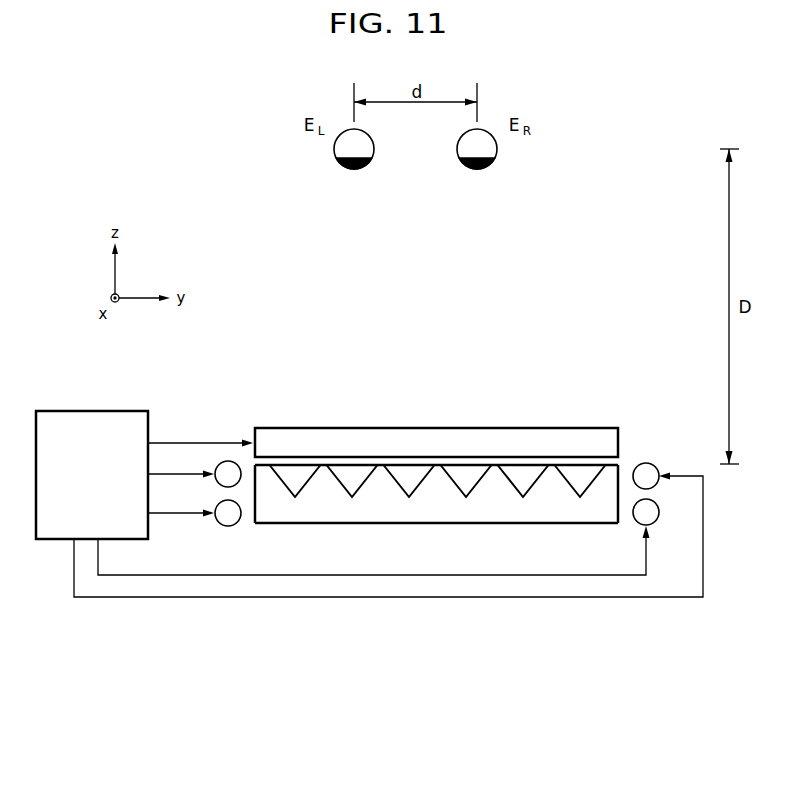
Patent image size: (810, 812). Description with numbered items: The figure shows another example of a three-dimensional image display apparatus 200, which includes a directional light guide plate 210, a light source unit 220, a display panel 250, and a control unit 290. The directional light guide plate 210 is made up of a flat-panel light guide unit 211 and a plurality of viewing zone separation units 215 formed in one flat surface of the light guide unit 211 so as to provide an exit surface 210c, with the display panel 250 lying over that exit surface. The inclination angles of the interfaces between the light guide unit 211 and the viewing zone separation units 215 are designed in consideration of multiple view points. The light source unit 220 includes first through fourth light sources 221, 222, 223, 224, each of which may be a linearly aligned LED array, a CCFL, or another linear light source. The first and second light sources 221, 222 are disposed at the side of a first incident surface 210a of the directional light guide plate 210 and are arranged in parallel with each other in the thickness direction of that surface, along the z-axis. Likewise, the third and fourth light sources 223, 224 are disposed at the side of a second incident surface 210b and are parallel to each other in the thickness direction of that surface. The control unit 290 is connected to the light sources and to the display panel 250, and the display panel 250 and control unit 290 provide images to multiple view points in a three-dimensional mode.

The 3D image display apparatus 200 is at (121, 196).
The control unit 290 is at (67, 411).
The display panel 250 is at (541, 428).
The directional light guide plate 210 is at (393, 545).
The first incident surface 210a is at (253, 523).
The second incident surface 210b is at (620, 507).
The exit surface 210c is at (584, 464).
The light guide unit 211 is at (458, 503).
The viewing zone separation units 215 is at (523, 490).
The light source unit 220 is at (210, 390).
The first light source 221 is at (225, 461).
The second light source 222 is at (222, 526).
The third light source 223 is at (655, 522).
The fourth light source 224 is at (651, 464).